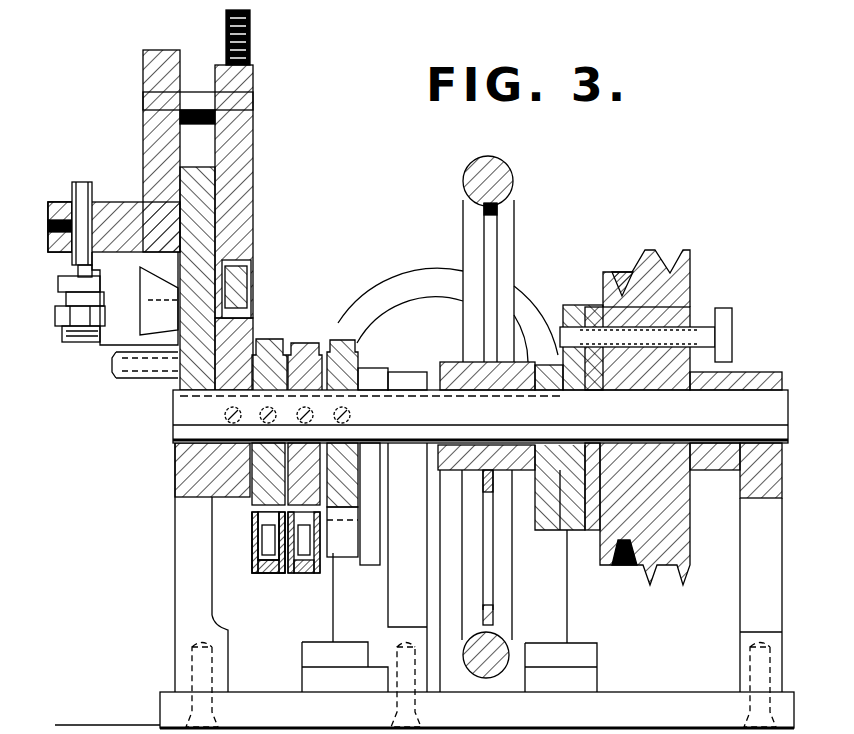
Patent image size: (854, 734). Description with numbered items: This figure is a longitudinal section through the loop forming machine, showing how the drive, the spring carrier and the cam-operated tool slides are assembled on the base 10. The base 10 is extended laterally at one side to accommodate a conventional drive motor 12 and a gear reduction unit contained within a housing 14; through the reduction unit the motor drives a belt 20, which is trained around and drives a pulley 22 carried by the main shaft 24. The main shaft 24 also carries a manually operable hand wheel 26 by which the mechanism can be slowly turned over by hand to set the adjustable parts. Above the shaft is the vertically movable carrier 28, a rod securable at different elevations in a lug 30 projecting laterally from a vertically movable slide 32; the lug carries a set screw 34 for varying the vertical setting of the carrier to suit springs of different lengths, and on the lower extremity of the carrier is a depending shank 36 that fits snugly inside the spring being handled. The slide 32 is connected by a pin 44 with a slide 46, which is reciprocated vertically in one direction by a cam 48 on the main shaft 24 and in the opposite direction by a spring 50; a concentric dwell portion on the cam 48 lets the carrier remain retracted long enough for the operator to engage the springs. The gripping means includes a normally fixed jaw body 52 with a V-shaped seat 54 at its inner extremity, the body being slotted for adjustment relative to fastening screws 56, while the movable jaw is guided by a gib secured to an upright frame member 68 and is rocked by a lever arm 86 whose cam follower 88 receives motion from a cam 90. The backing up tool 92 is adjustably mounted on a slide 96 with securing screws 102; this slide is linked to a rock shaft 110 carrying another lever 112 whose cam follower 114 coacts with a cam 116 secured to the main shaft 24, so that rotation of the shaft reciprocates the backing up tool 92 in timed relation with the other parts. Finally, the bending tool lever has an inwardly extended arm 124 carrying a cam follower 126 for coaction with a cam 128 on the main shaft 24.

The base 10 is at (165, 703).
The drive motor 12 is at (393, 292).
The housing 14 is at (423, 312).
The belt 20 is at (628, 285).
The pulley 22 is at (606, 284).
The main shaft 24 is at (180, 418).
The hand wheel 26 is at (478, 170).
The carrier 28 is at (84, 188).
The lug 30 is at (62, 248).
The slide 32 is at (162, 133).
The set screw 34 is at (60, 208).
The shank 36 is at (80, 274).
The pin 44 is at (158, 99).
The slide 46 is at (246, 143).
The cam 48 is at (215, 345).
The spring 50 is at (252, 40).
The jaw body 52 is at (84, 342).
The V-shaped seat 54 is at (78, 326).
The fastening screws 56 is at (58, 320).
The upright frame member 68 is at (185, 492).
The lever arm 86 is at (292, 562).
The cam follower 88 is at (262, 518).
The cam 90 is at (268, 340).
The backing up tool 92 is at (72, 300).
The slide 96 is at (200, 262).
The securing screws 102 is at (64, 290).
The rock shaft 110 is at (437, 372).
The lever 112 is at (372, 492).
The cam follower 114 is at (345, 560).
The cam 116 is at (340, 340).
The arm 124 is at (302, 578).
The cam follower 126 is at (284, 578).
The cam 128 is at (303, 345).